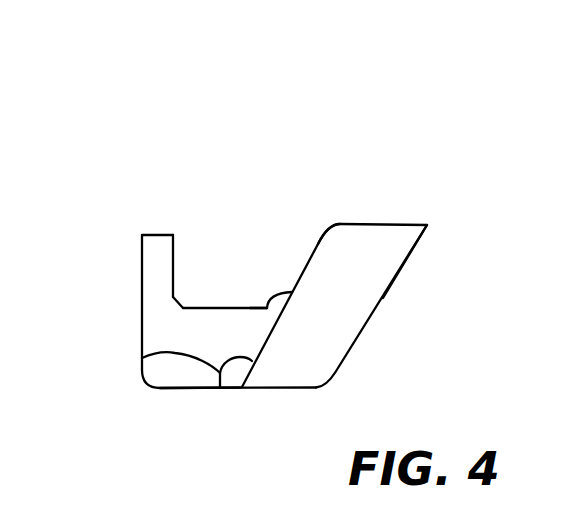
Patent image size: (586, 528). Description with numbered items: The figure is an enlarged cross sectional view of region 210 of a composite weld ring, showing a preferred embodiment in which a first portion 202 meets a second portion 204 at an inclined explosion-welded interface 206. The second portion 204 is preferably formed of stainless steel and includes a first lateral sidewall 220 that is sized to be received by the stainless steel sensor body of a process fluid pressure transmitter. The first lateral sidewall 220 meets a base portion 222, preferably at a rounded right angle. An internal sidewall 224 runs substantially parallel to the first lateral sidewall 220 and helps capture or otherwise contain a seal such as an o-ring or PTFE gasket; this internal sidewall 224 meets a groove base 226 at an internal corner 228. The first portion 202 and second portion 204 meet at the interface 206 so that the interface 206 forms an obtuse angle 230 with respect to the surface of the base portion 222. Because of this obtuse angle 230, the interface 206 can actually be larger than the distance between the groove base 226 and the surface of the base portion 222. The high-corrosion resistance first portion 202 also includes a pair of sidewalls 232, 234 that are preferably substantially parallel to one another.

The region 210 is at (455, 111).
The first portion 202 is at (390, 224).
The second portion 204 is at (228, 290).
The explosion-welded interface 206 is at (279, 318).
The first lateral sidewall 220 is at (142, 303).
The base portion 222 is at (175, 389).
The internal sidewall 224 is at (176, 254).
The groove base 226 is at (255, 303).
The internal corner 228 is at (181, 302).
The obtuse angle 230 is at (142, 358).
The sidewall 232 is at (321, 237).
The sidewall 234 is at (383, 298).